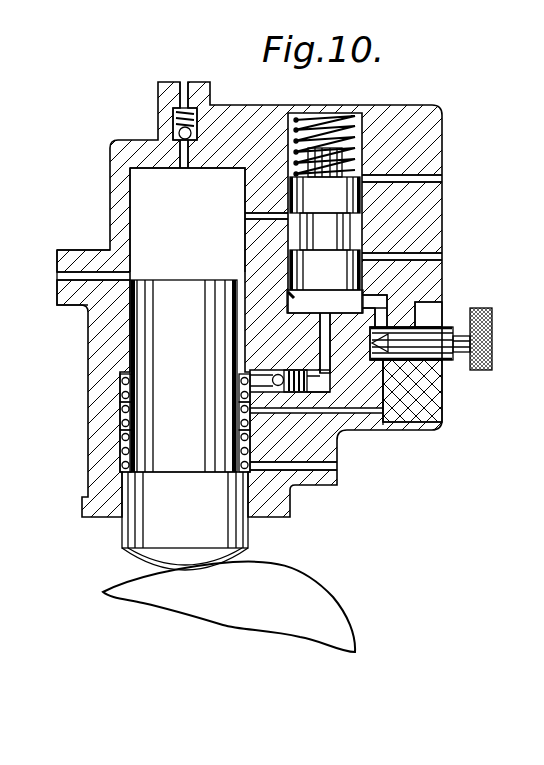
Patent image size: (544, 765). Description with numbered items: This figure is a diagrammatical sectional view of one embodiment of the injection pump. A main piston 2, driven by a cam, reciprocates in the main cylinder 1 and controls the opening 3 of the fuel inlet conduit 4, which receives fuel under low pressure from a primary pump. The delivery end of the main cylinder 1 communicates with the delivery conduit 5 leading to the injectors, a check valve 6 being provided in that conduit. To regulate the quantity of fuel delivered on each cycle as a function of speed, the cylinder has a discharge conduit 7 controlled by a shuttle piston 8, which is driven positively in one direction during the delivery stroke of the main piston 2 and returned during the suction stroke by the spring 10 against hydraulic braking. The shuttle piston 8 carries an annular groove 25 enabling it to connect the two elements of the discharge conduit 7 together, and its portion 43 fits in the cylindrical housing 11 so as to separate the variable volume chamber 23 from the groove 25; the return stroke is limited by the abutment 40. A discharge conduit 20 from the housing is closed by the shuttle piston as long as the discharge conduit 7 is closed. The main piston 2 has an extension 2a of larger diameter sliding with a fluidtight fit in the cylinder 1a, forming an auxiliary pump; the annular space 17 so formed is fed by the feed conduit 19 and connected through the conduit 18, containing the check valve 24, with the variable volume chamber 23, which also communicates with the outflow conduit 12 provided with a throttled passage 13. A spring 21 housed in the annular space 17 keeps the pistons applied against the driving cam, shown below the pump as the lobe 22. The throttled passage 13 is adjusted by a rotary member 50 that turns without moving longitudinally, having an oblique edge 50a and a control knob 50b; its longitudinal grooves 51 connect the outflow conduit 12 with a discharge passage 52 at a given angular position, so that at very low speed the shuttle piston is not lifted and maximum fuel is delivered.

The main cylinder 1 is at (181, 225).
The cylinder 1a is at (121, 443).
The main piston 2 is at (177, 334).
The extension 2a is at (180, 514).
The opening 3 is at (132, 277).
The fuel inlet conduit 4 is at (74, 276).
The delivery conduit 5 is at (184, 98).
The check valve 6 is at (179, 135).
The discharge conduit 7 is at (288, 216).
The shuttle piston 8 is at (322, 204).
The spring 10 is at (326, 122).
The cylindrical housing 11 is at (364, 304).
The outflow conduit 12 is at (410, 414).
The throttled passage 13 is at (385, 361).
The annular space 17 is at (121, 413).
The conduit 18 is at (327, 378).
The feed conduit 19 is at (330, 467).
The discharge conduit 20 is at (442, 257).
The spring 21 is at (121, 386).
The blade 22 is at (312, 588).
The variable volume chamber 23 is at (334, 311).
The check valve 24 is at (246, 381).
The annular groove 25 is at (350, 233).
The abutment 40 is at (290, 296).
The portion of shuttle piston 43 is at (328, 282).
The rotary member 50 is at (452, 341).
The oblique edge 50a is at (380, 357).
The control knob 50b is at (492, 338).
The longitudinal grooves 51 is at (436, 340).
The discharge passage 52 is at (432, 310).